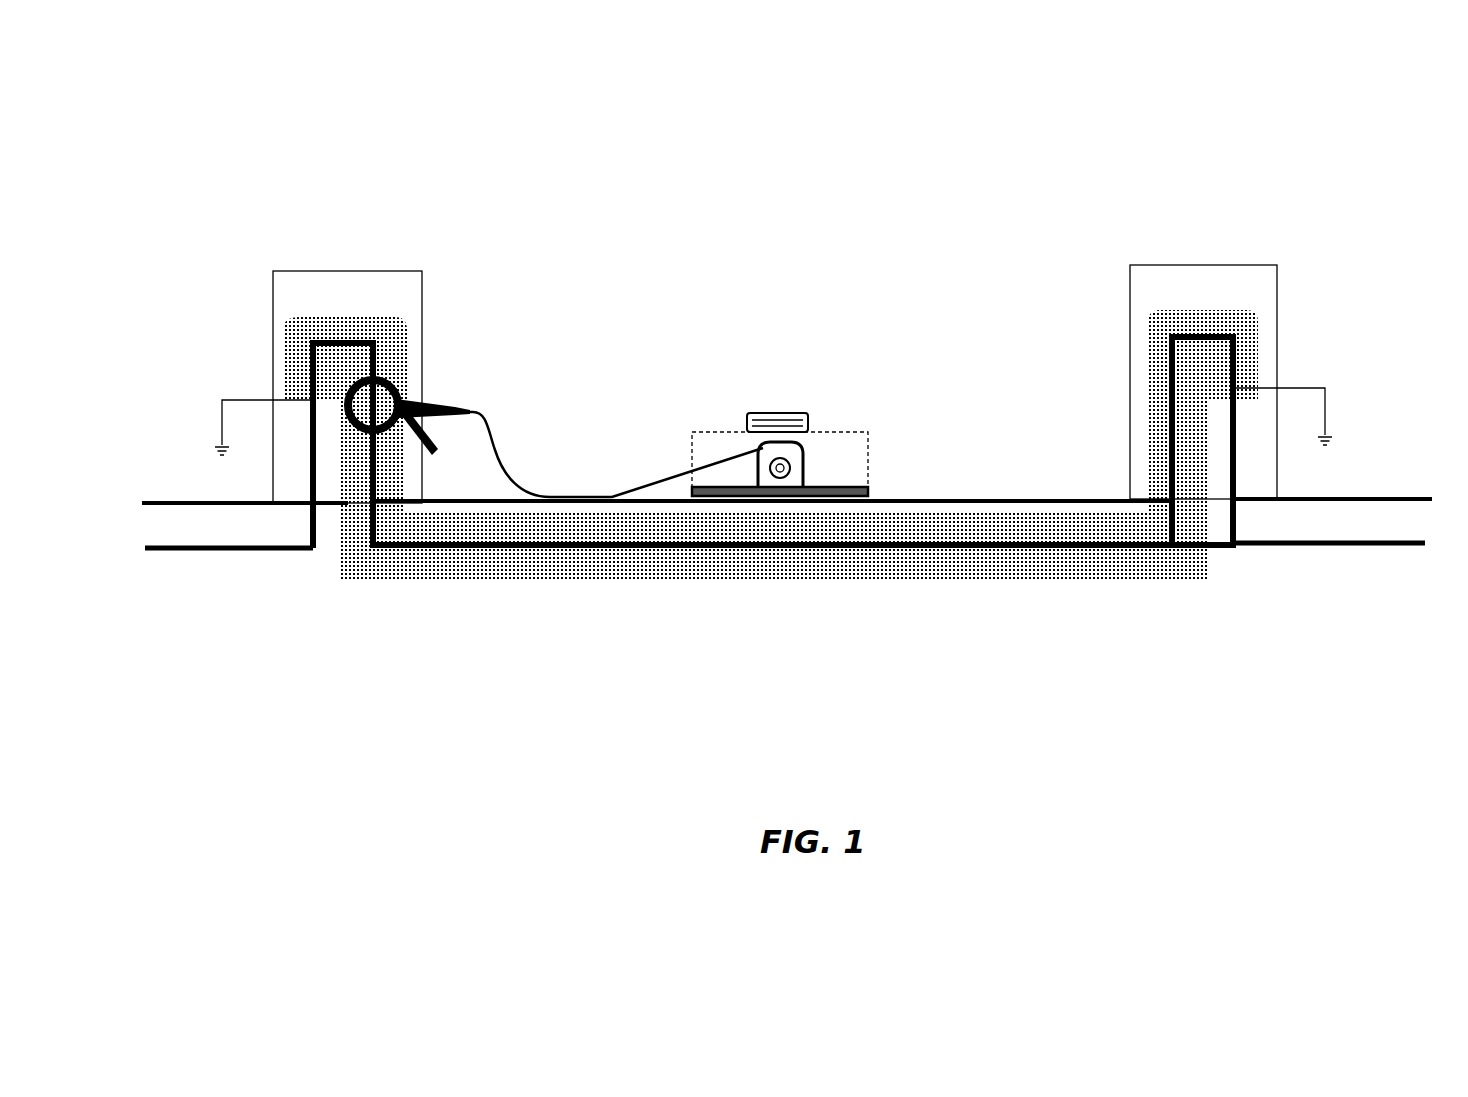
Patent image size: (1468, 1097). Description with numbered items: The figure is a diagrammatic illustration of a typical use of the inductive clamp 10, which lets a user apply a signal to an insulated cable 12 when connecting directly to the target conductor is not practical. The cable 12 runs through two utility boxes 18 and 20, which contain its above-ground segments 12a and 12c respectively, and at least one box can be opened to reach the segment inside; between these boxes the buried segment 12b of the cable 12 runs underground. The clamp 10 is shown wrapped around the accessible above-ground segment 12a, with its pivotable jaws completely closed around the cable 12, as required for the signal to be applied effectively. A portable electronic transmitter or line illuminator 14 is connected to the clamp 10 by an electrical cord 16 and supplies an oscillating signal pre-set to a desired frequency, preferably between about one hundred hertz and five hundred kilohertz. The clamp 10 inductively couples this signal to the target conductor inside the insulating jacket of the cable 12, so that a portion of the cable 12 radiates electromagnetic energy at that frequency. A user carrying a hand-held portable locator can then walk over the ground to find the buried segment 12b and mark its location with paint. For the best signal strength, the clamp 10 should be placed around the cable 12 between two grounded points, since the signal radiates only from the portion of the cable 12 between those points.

The inductive clamp 10 is at (395, 383).
The insulated cable 12 is at (808, 460).
The above-ground segment 12a is at (340, 343).
The buried segment 12b is at (1022, 547).
The above-ground segment 12c is at (1200, 335).
The portable electronic transmitter 14 is at (872, 488).
The electrical cord 16 is at (513, 478).
The utility box 18 is at (273, 286).
The utility box 20 is at (1277, 337).